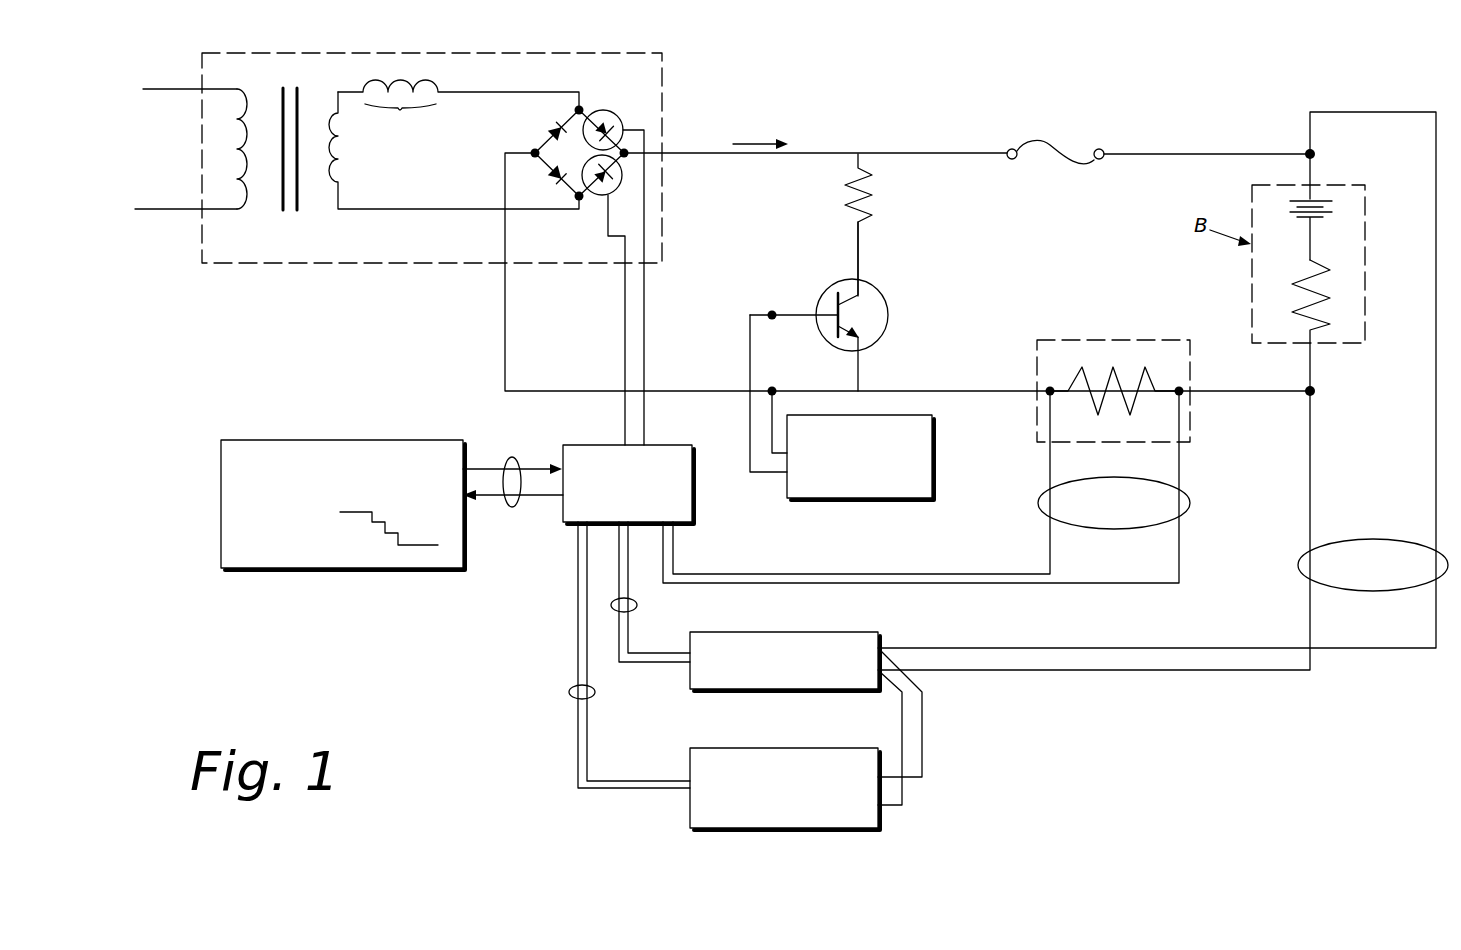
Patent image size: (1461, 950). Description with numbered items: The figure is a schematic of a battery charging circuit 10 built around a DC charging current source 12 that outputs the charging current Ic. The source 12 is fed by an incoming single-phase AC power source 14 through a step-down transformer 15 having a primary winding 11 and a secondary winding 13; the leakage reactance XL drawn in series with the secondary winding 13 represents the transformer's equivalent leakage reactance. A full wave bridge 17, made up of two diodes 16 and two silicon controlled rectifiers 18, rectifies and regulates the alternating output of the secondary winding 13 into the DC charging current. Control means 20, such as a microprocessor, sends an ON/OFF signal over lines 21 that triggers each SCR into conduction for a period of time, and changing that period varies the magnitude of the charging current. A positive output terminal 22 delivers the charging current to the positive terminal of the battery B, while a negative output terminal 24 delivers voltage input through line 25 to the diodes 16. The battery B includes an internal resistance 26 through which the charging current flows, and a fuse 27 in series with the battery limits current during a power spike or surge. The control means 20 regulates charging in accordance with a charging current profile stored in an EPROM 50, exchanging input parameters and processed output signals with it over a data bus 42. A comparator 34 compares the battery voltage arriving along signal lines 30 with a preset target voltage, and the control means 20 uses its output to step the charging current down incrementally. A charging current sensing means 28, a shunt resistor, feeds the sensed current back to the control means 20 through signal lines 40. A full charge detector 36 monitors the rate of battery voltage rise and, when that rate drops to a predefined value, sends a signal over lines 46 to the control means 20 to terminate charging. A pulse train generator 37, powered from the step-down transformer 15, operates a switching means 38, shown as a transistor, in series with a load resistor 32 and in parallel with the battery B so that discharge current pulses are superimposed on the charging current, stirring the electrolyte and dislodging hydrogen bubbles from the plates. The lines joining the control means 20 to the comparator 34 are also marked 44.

The circuit 10 is at (898, 136).
The primary winding 11 is at (232, 200).
The DC charging current source 12 is at (197, 72).
The secondary winding 13 is at (332, 186).
The AC power source 14 is at (122, 150).
The step-down transformer 15 is at (258, 220).
The diodes 16 is at (548, 177).
The full wave bridge 17 is at (590, 100).
The silicon controlled rectifiers 18 is at (626, 177).
The control means 20 is at (590, 433).
The lines 21 is at (644, 330).
The positive output terminal 22 is at (1302, 145).
The negative output terminal 24 is at (1305, 397).
The line 25 is at (687, 388).
The internal resistance 26 is at (1305, 310).
The fuse 27 is at (1037, 138).
The charging current sensing means 28 is at (1104, 332).
The signal lines 30 is at (1298, 570).
The load resistor 32 is at (850, 208).
The comparator 34 is at (802, 627).
The full charge detector 36 is at (791, 742).
The pulse train generator 37 is at (830, 500).
The switching means 38 is at (831, 278).
The signal lines 40 is at (1190, 505).
The data bus 42 is at (512, 508).
The comparator connection lines 44 is at (637, 605).
The lines 46 is at (569, 692).
The EPROM 50 is at (341, 432).